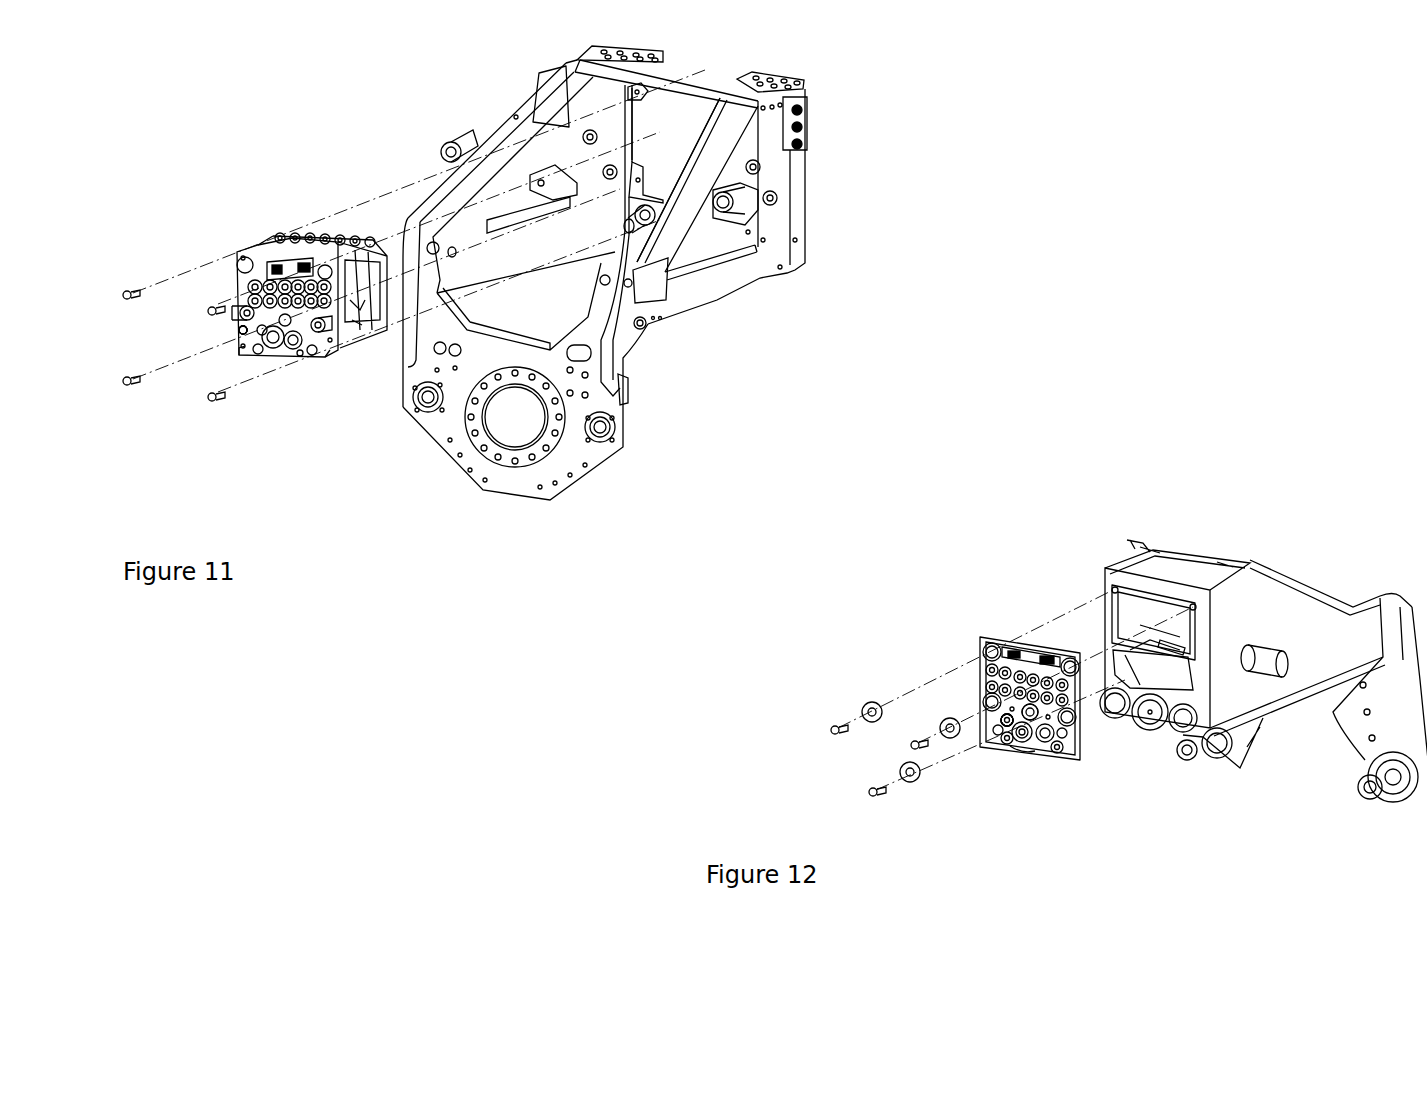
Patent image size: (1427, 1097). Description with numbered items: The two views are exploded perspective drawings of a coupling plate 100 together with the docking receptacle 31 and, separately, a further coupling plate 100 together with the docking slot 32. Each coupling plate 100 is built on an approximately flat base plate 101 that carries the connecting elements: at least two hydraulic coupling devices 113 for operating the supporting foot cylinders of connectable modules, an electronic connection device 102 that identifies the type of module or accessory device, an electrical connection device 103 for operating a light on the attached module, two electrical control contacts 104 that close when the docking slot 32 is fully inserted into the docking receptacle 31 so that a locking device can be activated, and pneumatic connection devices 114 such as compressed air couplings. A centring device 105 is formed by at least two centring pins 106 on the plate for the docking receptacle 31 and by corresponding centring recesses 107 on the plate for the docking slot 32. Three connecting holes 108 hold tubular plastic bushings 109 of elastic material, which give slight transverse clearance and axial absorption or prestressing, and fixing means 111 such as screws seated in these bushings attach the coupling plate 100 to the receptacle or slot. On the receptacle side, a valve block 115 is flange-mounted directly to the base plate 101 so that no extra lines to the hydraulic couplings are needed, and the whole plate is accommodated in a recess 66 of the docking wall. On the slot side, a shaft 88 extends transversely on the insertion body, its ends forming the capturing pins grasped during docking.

In FIG. 11, the docking receptacle 31 is at (852, 137).
In FIG. 12, the docking slot 32 is at (1288, 515).
In FIG. 11, the recess 66 is at (682, 100).
In FIG. 12, the shaft 88 is at (1183, 647).
In FIG. 11, the coupling plate 100 is at (268, 247).
In FIG. 12, the coupling plate 100 is at (1007, 630).
In FIG. 11, the base plate 101 is at (273, 350).
In FIG. 12, the base plate 101 is at (1077, 707).
In FIG. 11, the electronic connection device 102 is at (245, 332).
In FIG. 12, the electronic connection device 102 is at (1007, 742).
In FIG. 11, the electrical connection device 103 is at (243, 330).
In FIG. 12, the electrical connection device 103 is at (1007, 720).
In FIG. 11, the electrical control contacts 104 is at (243, 330).
In FIG. 12, the electrical control contacts 104 is at (1007, 720).
In FIG. 11, the centring device 105 is at (322, 327).
In FIG. 12, the centring device 105 is at (1068, 712).
In FIG. 11, the centring pins 106 is at (240, 310).
In FIG. 12, the centring recesses 107 is at (987, 697).
In FIG. 12, the connecting holes 108 is at (987, 644).
In FIG. 12, the plastic bushings 109 is at (945, 722).
In FIG. 11, the fixing means 111 is at (208, 396).
In FIG. 12, the fixing means 111 is at (912, 742).
In FIG. 11, the hydraulic coupling devices 113 is at (243, 330).
In FIG. 12, the hydraulic coupling devices 113 is at (1007, 720).
In FIG. 11, the pneumatic connection devices 114 is at (243, 330).
In FIG. 12, the pneumatic connection devices 114 is at (1007, 720).
In FIG. 11, the valve block 115 is at (337, 243).